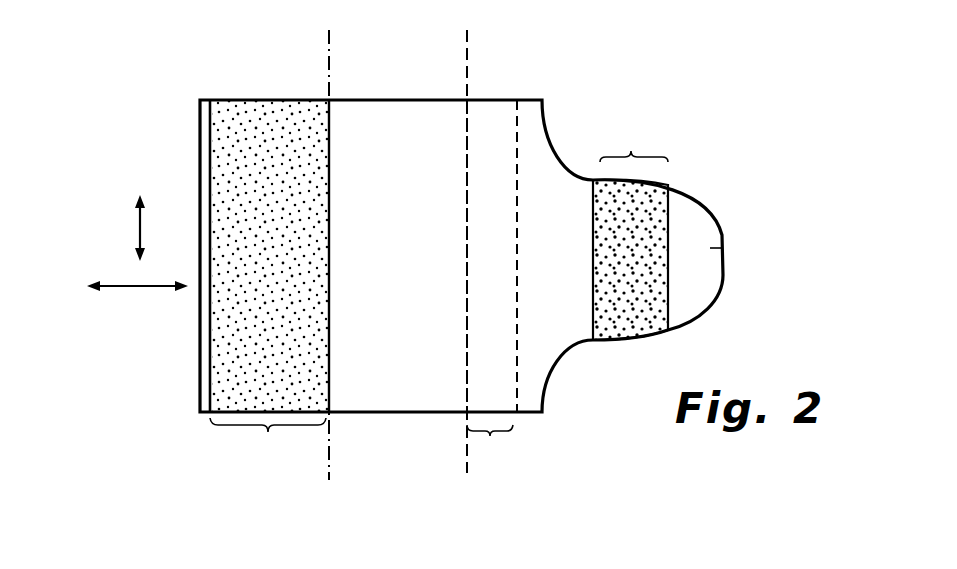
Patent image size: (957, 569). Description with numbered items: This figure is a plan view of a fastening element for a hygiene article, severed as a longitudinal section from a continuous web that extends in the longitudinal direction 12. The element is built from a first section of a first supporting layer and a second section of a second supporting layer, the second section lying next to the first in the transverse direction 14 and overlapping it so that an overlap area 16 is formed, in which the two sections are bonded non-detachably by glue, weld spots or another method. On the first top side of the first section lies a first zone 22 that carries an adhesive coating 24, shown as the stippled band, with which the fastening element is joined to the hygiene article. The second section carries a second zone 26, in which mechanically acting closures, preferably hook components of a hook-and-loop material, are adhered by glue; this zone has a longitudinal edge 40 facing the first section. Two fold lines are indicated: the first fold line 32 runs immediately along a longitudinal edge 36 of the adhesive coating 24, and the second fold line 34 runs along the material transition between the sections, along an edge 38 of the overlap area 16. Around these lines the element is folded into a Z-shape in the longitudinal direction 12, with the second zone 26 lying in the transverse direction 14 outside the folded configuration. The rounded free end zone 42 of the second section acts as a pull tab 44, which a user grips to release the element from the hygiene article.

The longitudinal direction 12 is at (138, 230).
The transverse direction 14 is at (140, 288).
The overlap area 16 is at (492, 284).
The first zone 22 is at (269, 284).
The adhesive coating 24 is at (257, 107).
The second zone 26 is at (634, 137).
The first fold line 32 is at (329, 471).
The second fold line 34 is at (467, 470).
The longitudinal edge of the adhesive coating 36 is at (331, 187).
The edge of the overlap area 38 is at (460, 331).
The longitudinal edge of the second zone 40 is at (591, 240).
The free end zone 42 is at (720, 260).
The pull tab 44 is at (723, 243).